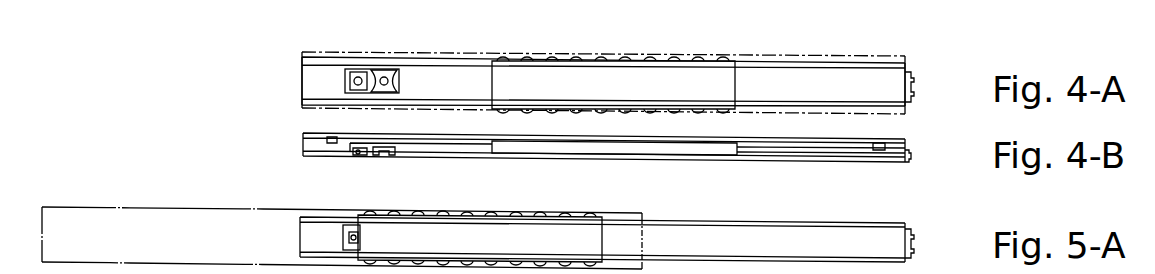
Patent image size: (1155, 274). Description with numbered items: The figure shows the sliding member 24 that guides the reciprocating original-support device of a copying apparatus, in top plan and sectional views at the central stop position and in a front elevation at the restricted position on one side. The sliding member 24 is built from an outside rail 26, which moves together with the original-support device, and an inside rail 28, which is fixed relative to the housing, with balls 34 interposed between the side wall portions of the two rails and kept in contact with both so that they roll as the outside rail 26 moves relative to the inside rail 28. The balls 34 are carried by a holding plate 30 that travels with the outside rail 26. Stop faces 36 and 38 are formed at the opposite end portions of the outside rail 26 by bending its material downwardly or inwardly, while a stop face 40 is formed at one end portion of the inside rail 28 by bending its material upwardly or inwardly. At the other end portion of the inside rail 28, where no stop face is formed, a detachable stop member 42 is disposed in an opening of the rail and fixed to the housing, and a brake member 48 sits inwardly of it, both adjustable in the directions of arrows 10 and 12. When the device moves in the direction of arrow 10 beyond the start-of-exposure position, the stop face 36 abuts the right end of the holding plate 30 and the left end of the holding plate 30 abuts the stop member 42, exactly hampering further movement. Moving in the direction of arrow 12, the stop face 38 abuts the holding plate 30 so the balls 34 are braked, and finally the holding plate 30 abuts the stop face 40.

In FIG. 4-A, the arrow 10 is at (540, 33).
In FIG. 4-B, the arrow 10 is at (652, 168).
In FIG. 5-A, the arrow 10 is at (173, 188).
In FIG. 4-A, the arrow 12 is at (568, 43).
In FIG. 4-B, the arrow 12 is at (680, 178).
In FIG. 5-A, the arrow 12 is at (203, 195).
In FIG. 4-A, the sliding member 24 is at (500, 38).
In FIG. 4-B, the sliding member 24 is at (481, 158).
In FIG. 5-A, the sliding member 24 is at (587, 210).
In FIG. 4-A, the outside rail 26 is at (440, 52).
In FIG. 4-B, the outside rail 26 is at (442, 136).
In FIG. 5-A, the outside rail 26 is at (247, 207).
In FIG. 4-A, the inside rail 28 is at (469, 68).
In FIG. 4-B, the inside rail 28 is at (430, 155).
In FIG. 5-A, the inside rail 28 is at (306, 242).
In FIG. 4-A, the holding plate 30 is at (638, 67).
In FIG. 4-B, the holding plate 30 is at (556, 148).
In FIG. 5-A, the holding plate 30 is at (493, 216).
In FIG. 4-A, the balls 34 is at (697, 57).
In FIG. 5-A, the balls 34 is at (443, 212).
In FIG. 4-B, the stop face 36 is at (878, 162).
In FIG. 4-B, the stop face 38 is at (330, 143).
In FIG. 4-A, the stop face 40 is at (914, 87).
In FIG. 4-B, the stop face 40 is at (912, 156).
In FIG. 5-A, the stop face 40 is at (914, 244).
In FIG. 4-A, the stop member 42 is at (359, 68).
In FIG. 4-B, the stop member 42 is at (360, 147).
In FIG. 5-A, the stop member 42 is at (352, 226).
In FIG. 4-A, the brake member 48 is at (385, 68).
In FIG. 4-B, the brake member 48 is at (398, 147).